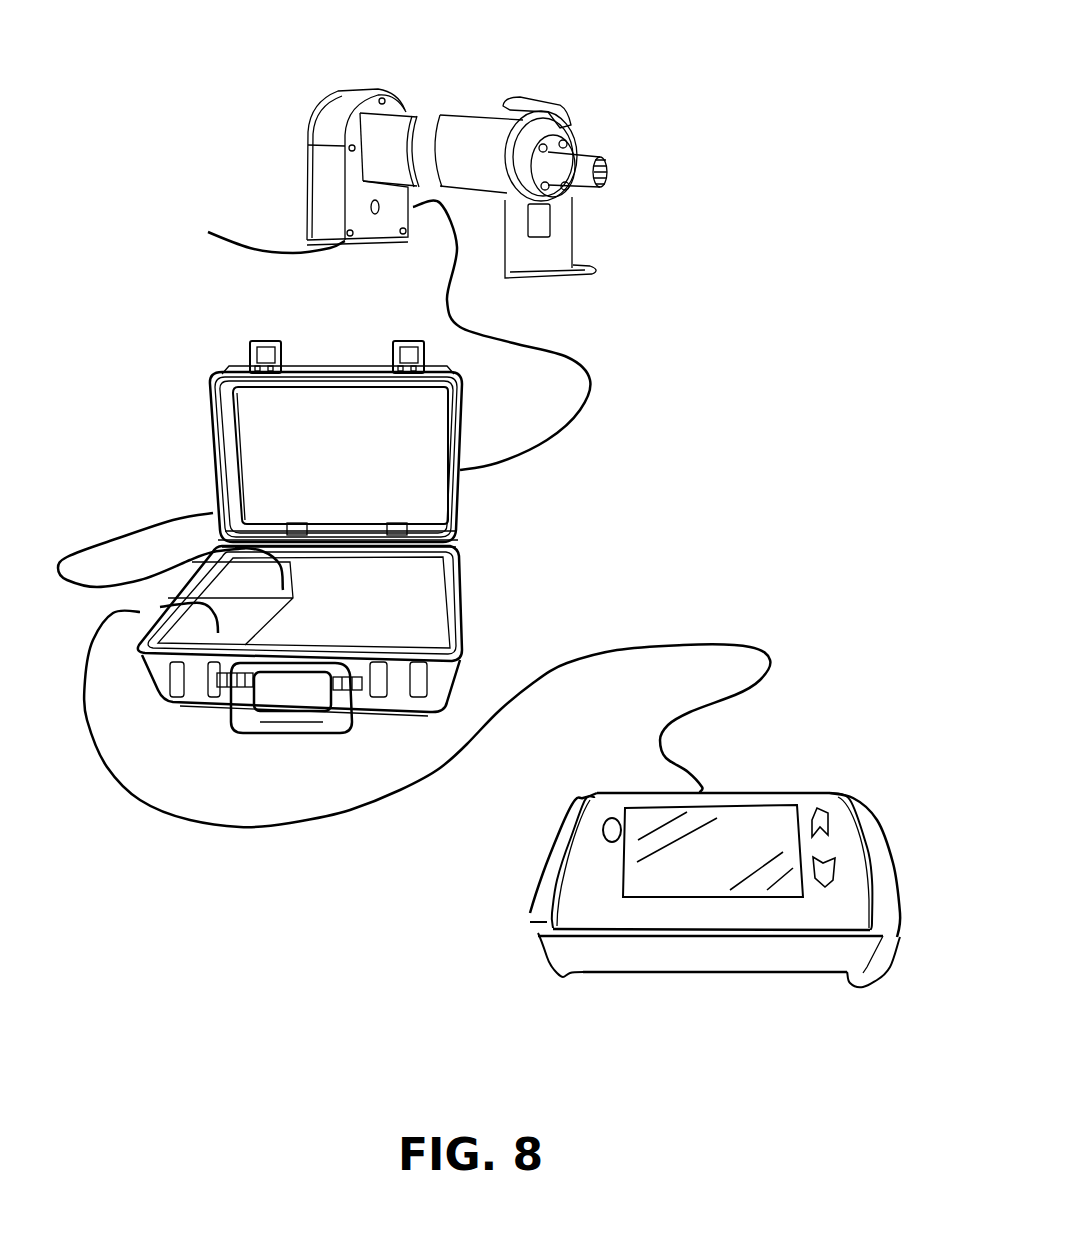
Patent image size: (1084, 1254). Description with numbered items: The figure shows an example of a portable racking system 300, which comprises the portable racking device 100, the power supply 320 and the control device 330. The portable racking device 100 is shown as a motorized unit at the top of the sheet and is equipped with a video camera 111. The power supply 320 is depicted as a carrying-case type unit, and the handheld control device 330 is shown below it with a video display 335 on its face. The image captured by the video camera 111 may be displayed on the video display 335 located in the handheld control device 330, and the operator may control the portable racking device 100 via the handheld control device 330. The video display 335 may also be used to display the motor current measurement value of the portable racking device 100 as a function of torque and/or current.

The portable racking device 100 is at (486, 80).
The video camera 111 is at (258, 227).
The portable racking system 300 is at (790, 241).
The power supply 320 is at (420, 608).
The control device 330 is at (486, 955).
The video display 335 is at (757, 840).